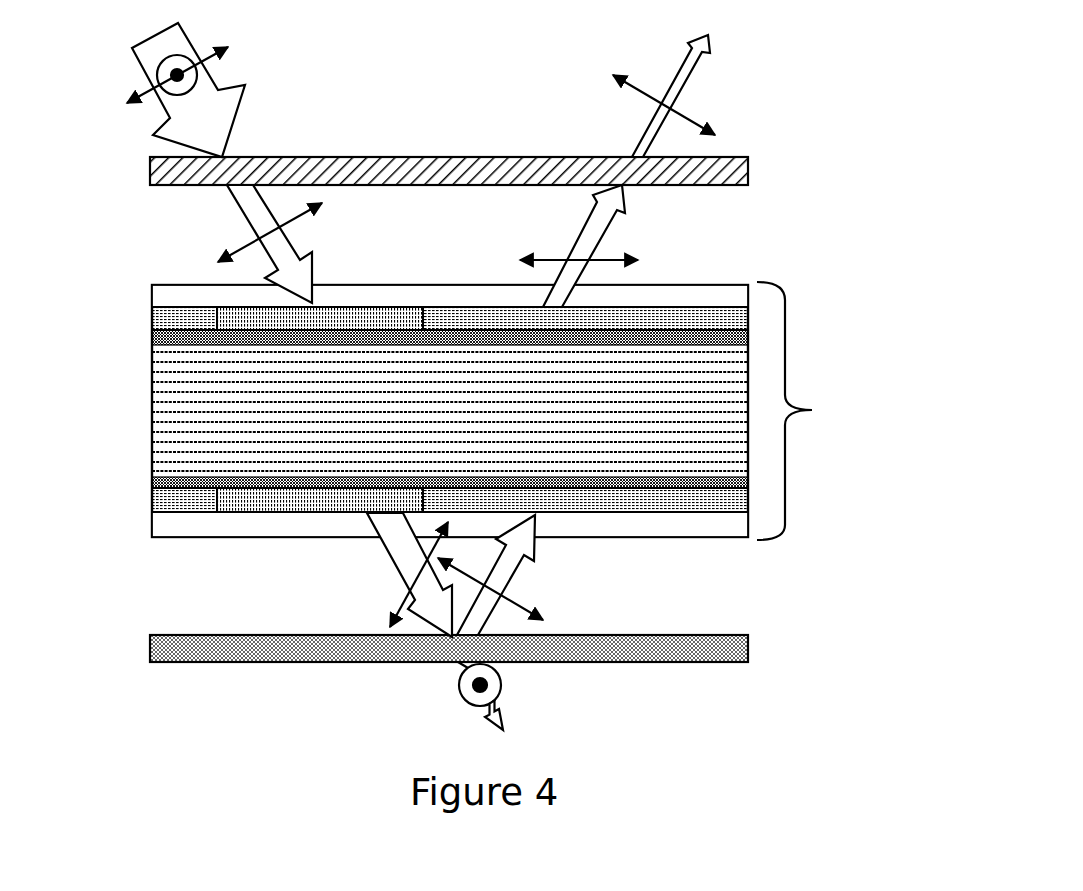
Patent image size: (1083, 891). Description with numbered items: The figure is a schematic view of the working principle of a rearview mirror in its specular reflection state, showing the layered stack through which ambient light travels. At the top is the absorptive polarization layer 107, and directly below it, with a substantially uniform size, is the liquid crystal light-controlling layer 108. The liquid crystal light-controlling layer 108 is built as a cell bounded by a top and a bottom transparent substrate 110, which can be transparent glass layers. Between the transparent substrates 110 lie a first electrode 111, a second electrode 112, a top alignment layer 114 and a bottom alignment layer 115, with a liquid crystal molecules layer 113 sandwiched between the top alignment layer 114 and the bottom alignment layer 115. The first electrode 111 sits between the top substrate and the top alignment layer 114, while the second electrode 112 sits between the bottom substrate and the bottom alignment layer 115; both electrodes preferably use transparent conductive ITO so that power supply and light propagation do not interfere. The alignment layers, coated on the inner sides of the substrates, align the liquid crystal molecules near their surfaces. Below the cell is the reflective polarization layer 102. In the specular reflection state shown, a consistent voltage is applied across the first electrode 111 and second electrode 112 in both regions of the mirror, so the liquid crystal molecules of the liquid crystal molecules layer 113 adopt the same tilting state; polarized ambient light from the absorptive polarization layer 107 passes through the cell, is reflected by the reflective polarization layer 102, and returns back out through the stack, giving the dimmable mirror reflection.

The reflective polarization layer 102 is at (150, 650).
The absorptive polarization layer 107 is at (150, 173).
The liquid crystal light-controlling layer 108 is at (815, 410).
The transparent substrate 110 is at (152, 292).
The first electrode 111 is at (152, 317).
The second electrode 112 is at (152, 505).
The liquid crystal molecules layer 113 is at (152, 410).
The top alignment layer 114 is at (152, 338).
The bottom alignment layer 115 is at (152, 480).